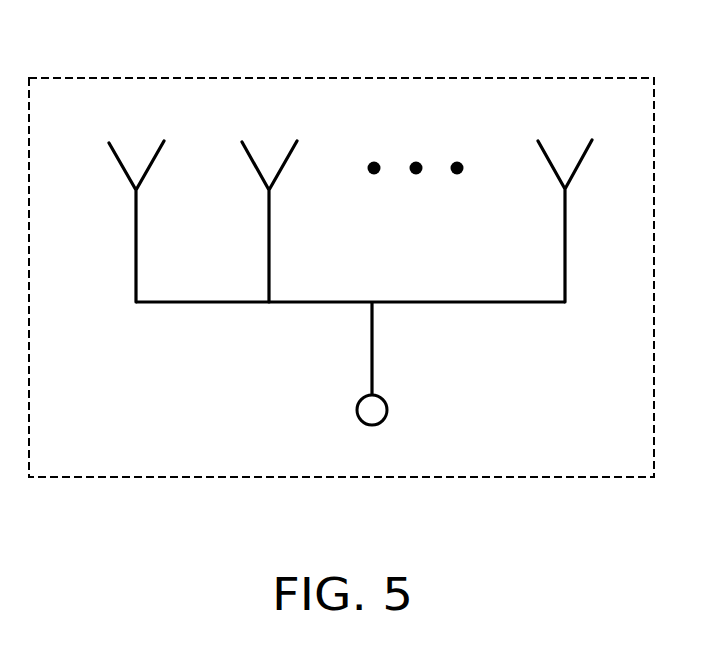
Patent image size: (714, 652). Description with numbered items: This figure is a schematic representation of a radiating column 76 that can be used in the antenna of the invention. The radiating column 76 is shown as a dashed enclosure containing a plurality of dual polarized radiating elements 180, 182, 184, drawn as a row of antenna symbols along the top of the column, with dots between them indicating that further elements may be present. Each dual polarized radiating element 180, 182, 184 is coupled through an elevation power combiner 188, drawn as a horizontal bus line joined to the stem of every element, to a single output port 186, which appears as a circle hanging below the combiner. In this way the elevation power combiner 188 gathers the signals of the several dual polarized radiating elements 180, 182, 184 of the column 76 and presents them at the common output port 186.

The radiating column 76 is at (342, 77).
The dual polarized radiating element 180 is at (108, 142).
The dual polarized radiating element 182 is at (241, 142).
The dual polarized radiating element 184 is at (537, 141).
The output port 186 is at (381, 423).
The elevation power combiner 188 is at (477, 303).